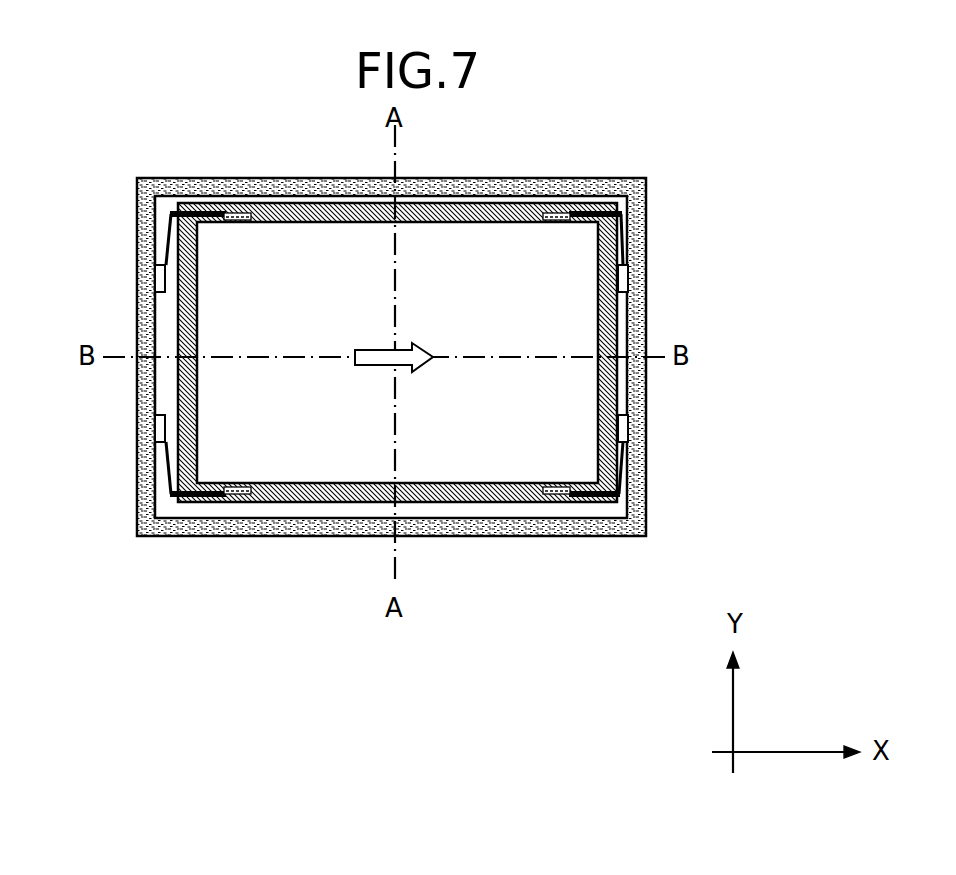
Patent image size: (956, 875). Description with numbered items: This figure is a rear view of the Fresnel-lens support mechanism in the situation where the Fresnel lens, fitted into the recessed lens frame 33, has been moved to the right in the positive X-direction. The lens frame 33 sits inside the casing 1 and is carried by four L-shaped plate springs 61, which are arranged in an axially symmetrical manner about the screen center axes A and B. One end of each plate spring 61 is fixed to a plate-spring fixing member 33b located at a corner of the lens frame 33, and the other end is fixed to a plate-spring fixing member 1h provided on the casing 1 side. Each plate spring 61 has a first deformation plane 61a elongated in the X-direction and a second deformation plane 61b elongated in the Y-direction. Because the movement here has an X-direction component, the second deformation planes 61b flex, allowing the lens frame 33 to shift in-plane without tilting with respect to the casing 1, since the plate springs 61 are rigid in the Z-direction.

The casing 1 is at (645, 513).
The plate-spring fixing member 1h is at (157, 277).
The lens frame 33 is at (612, 330).
The plate-spring fixing member 33b is at (228, 214).
The plate spring 61 is at (361, 364).
The first deformation plane 61a is at (196, 212).
The second deformation plane 61b is at (167, 232).